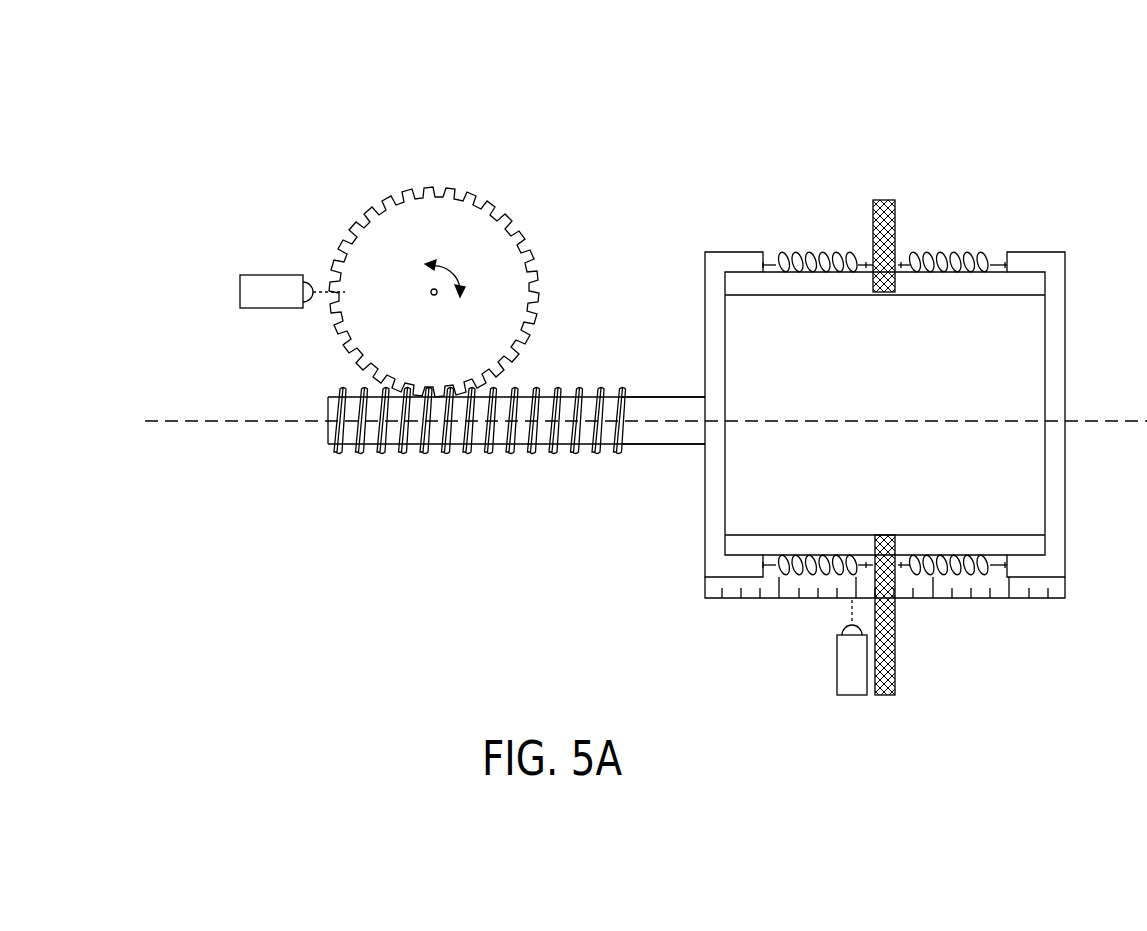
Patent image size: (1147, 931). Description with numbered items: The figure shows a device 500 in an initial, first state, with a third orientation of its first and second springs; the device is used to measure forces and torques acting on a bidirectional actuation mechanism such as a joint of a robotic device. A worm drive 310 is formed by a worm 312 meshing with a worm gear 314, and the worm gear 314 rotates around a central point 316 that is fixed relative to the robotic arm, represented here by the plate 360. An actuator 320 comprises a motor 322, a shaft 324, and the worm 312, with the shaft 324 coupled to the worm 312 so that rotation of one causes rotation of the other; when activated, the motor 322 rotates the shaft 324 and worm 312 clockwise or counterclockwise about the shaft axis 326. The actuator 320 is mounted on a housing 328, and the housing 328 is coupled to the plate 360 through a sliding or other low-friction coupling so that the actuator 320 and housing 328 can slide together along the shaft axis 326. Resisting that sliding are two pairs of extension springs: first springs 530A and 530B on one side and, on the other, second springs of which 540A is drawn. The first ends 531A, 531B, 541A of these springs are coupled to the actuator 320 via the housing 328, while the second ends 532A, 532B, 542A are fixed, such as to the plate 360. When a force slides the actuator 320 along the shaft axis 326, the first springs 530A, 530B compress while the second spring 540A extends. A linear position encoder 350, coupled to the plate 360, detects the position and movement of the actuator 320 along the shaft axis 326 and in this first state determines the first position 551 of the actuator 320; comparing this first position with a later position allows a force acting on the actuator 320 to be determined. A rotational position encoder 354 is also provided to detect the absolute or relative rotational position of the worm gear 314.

The device 500 is at (303, 88).
The worm drive 310 is at (462, 310).
The worm 312 is at (425, 454).
The worm gear 314 is at (465, 200).
The central point 316 is at (432, 289).
The actuator 320 is at (848, 450).
The motor 322 is at (890, 335).
The shaft 324 is at (673, 407).
The shaft axis 326 is at (268, 422).
The housing 328 is at (1050, 470).
The linear position encoder 350 is at (848, 660).
The rotational position encoder 354 is at (275, 282).
The plate 360 is at (886, 692).
The first spring 530A is at (810, 262).
The first end of first spring 531A is at (764, 258).
The second end of first spring 532A is at (862, 262).
The second spring 540A is at (960, 262).
The first end of second spring 541A is at (1012, 262).
The second end of second spring 542A is at (912, 262).
The first spring 530B is at (815, 565).
The first end of first spring 531B is at (762, 568).
The second end of first spring 532B is at (855, 570).
The first position 551 is at (852, 598).